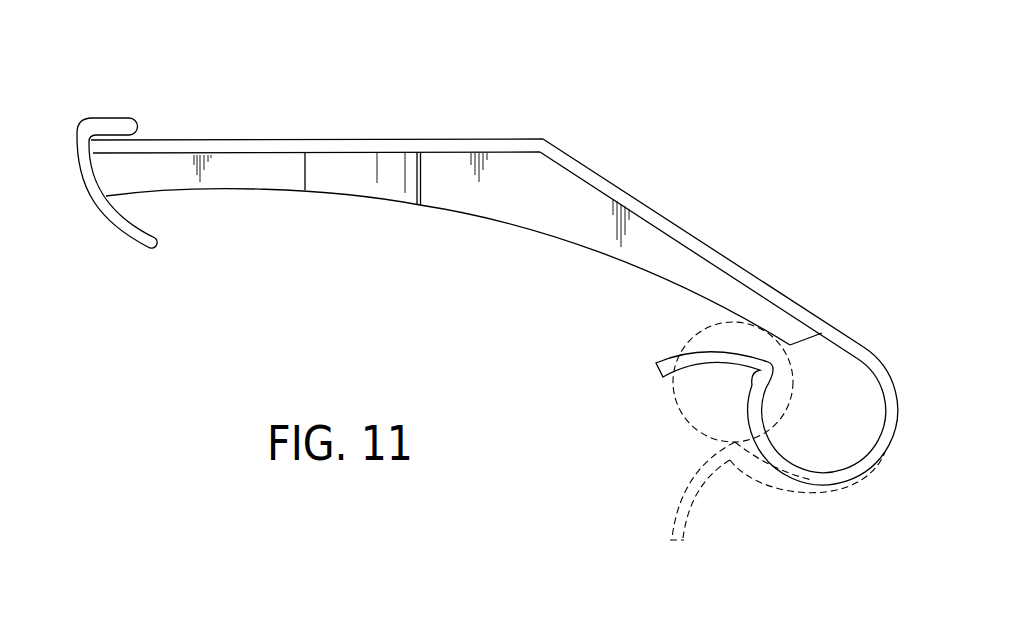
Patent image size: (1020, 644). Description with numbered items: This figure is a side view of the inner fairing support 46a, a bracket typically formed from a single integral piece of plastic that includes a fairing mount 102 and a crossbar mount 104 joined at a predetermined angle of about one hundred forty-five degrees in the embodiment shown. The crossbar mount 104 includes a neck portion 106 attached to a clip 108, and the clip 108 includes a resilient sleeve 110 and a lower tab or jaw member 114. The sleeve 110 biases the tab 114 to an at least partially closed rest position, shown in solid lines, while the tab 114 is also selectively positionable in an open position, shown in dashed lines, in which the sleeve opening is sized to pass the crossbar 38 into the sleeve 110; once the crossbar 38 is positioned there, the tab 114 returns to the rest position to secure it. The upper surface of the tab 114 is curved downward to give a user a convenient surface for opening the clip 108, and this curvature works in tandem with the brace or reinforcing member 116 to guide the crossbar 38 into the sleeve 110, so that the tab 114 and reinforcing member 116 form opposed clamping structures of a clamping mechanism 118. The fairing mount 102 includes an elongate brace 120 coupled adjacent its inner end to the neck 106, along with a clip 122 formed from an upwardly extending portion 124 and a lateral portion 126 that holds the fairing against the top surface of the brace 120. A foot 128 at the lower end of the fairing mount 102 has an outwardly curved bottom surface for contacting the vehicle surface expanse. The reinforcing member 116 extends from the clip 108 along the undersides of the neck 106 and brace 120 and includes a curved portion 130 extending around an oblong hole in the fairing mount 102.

The inner fairing support 46a is at (732, 102).
The fairing mount 102 is at (248, 138).
The crossbar mount 104 is at (665, 215).
The neck portion 106 is at (598, 168).
The clip 108 is at (838, 508).
The sleeve 110 is at (892, 412).
The tab 114 is at (660, 361).
The reinforcing member 116 is at (260, 182).
The clamping mechanism 118 is at (677, 312).
The elongate brace 120 is at (457, 138).
The clip 122 is at (123, 112).
The upwardly extending portion 124 is at (76, 129).
The lateral portion 126 is at (113, 116).
The foot 128 is at (105, 217).
The curved portion 130 is at (355, 173).
The crossbar 38 is at (676, 417).